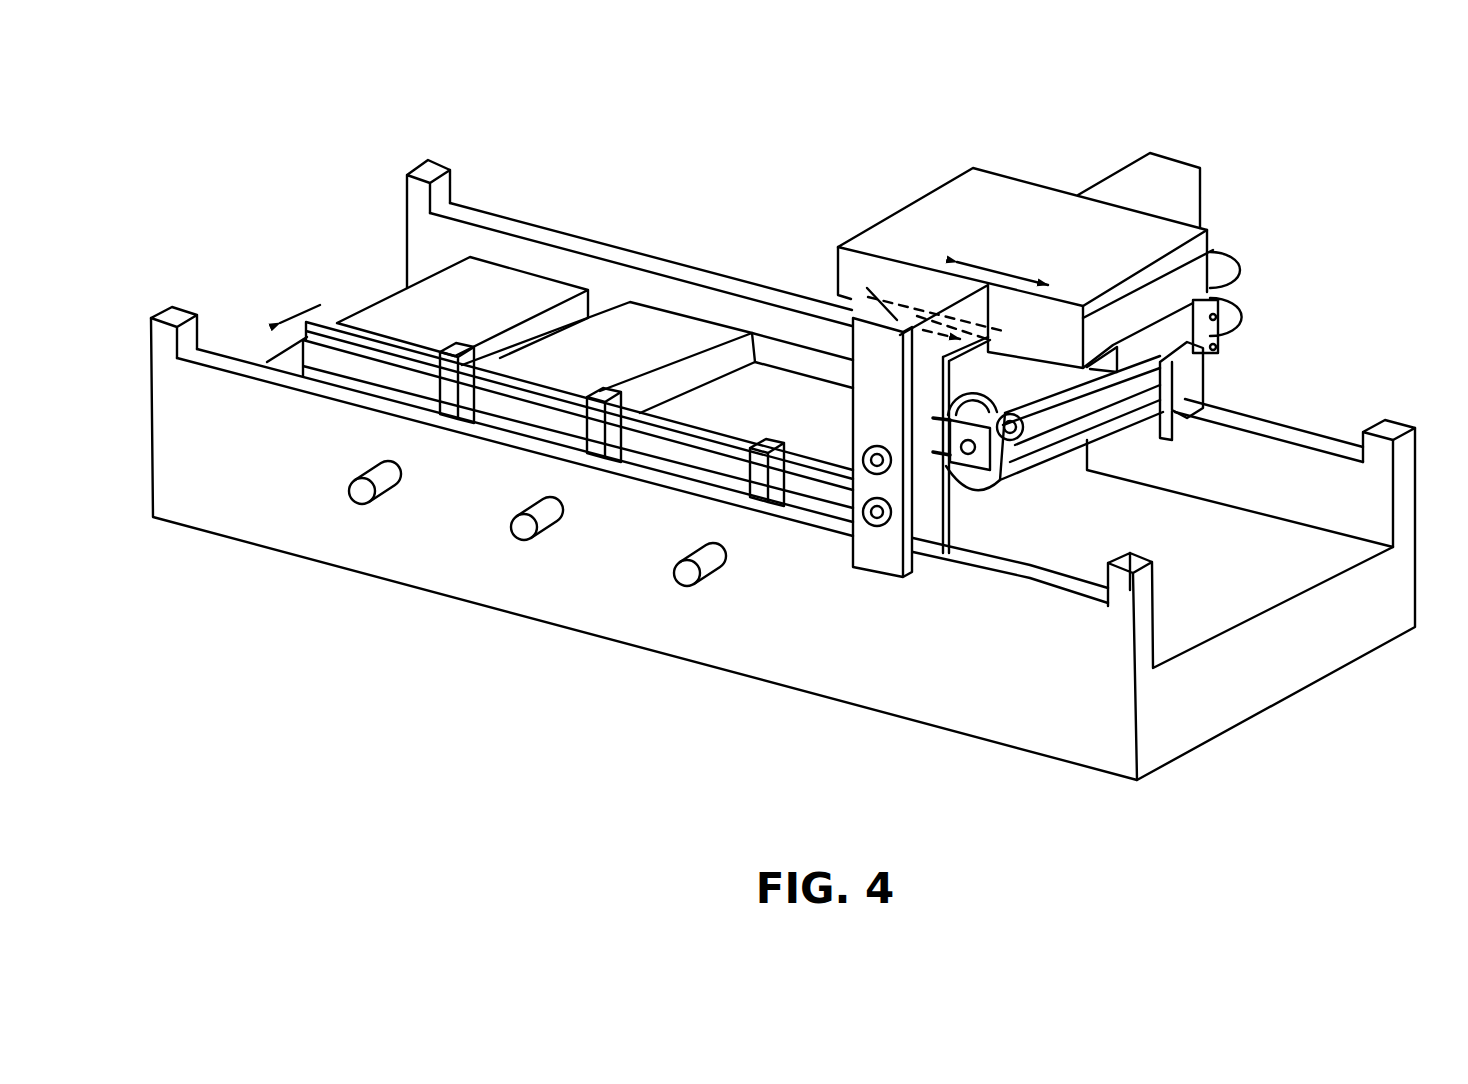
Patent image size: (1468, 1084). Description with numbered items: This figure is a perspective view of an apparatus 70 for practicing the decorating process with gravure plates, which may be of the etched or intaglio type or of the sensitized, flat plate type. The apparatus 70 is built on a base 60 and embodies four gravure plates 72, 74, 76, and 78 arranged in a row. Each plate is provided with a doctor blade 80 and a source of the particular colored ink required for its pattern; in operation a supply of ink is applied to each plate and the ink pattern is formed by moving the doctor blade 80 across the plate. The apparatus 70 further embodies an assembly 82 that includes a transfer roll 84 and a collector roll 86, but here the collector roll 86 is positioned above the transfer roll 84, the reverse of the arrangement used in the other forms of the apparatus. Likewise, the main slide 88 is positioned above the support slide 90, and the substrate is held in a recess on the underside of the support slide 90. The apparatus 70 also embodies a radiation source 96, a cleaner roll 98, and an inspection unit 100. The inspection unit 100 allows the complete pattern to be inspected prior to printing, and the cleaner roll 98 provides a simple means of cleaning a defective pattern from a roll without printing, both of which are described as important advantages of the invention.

The base 60 is at (783, 470).
The apparatus 70 is at (838, 40).
The gravure plate 72 is at (847, 453).
The gravure plate 74 is at (757, 388).
The gravure plate 76 is at (650, 322).
The gravure plate 78 is at (518, 285).
The doctor blade 80 is at (393, 350).
The assembly 82 is at (1382, 303).
The transfer roll 84 is at (985, 500).
The collector roll 86 is at (980, 417).
The main slide 88 is at (1033, 207).
The support slide 90 is at (877, 273).
The radiation source 96 is at (1187, 407).
The cleaner roll 98 is at (1090, 390).
The inspection unit 100 is at (1200, 218).